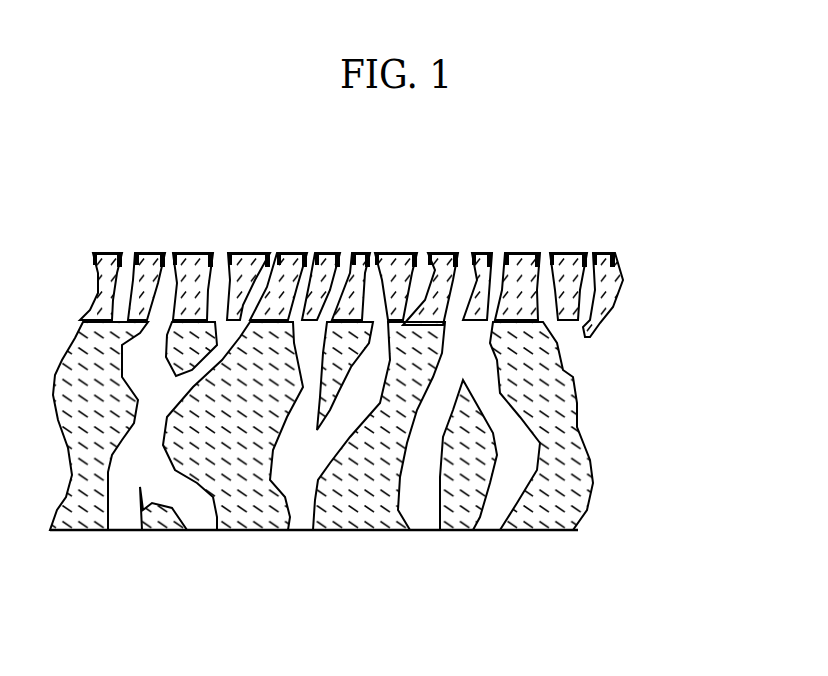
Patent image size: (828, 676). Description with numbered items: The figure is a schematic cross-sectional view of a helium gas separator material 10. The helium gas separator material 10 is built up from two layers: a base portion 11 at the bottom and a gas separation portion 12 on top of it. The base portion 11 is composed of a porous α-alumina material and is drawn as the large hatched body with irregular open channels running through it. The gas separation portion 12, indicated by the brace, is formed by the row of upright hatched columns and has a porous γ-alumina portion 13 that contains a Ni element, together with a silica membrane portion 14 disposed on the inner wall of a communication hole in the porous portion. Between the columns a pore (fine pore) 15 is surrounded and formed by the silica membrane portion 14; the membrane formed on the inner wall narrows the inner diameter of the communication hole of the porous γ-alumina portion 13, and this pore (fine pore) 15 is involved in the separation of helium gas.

The helium gas separator material 10 is at (563, 187).
The base portion 11 is at (570, 480).
The gas separation portion 12 is at (640, 248).
The porous γ-alumina portion 13 is at (192, 250).
The silica membrane portion 14 is at (312, 248).
The pore (fine pore) 15 is at (423, 255).